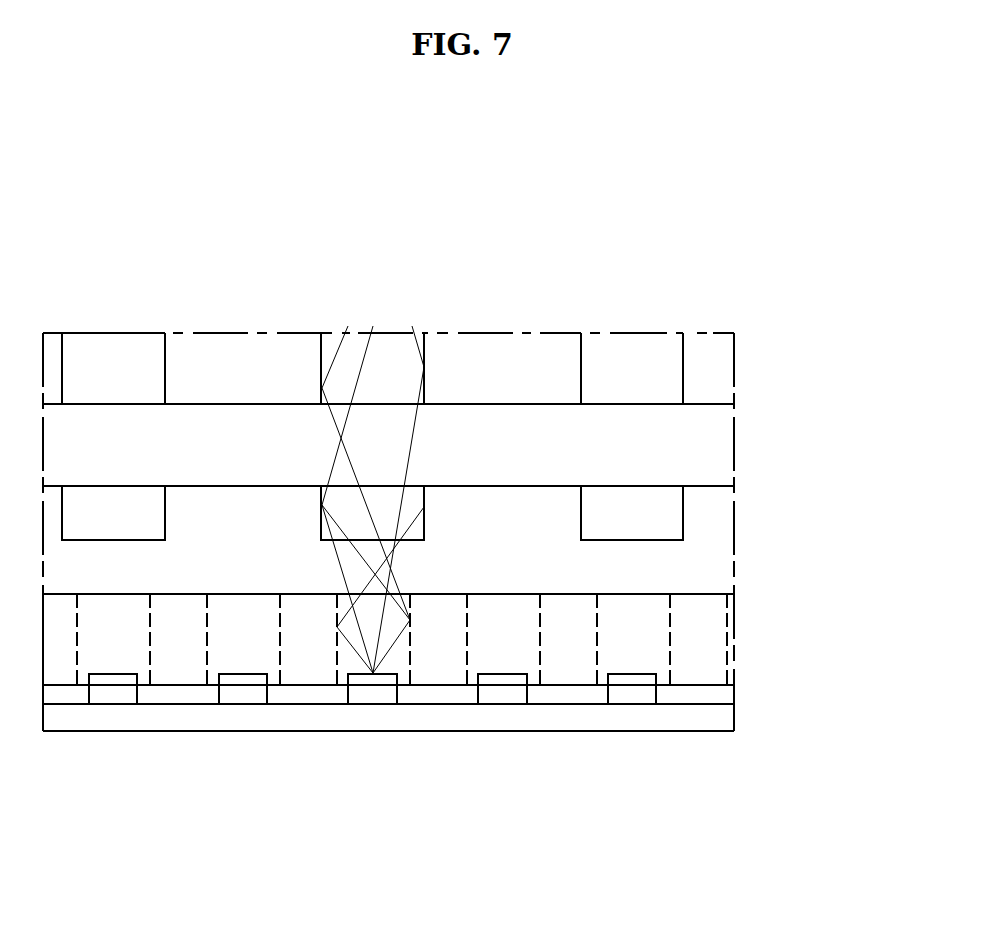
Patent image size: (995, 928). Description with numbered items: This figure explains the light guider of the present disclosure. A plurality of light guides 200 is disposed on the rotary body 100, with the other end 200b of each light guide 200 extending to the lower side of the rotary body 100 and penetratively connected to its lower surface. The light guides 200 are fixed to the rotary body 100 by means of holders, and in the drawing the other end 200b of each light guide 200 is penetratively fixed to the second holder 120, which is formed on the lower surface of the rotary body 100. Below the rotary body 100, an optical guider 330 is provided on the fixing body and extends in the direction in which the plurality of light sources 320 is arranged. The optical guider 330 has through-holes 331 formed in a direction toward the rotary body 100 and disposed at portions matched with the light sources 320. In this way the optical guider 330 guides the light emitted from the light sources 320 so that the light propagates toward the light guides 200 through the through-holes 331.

The rotary body 100 is at (499, 362).
The second holder 120 is at (700, 443).
The light guide 200 is at (385, 350).
The other end of light guide 200b is at (100, 505).
The light source 320 is at (490, 700).
The optical guider 330 is at (570, 685).
The through-hole 331 is at (280, 646).